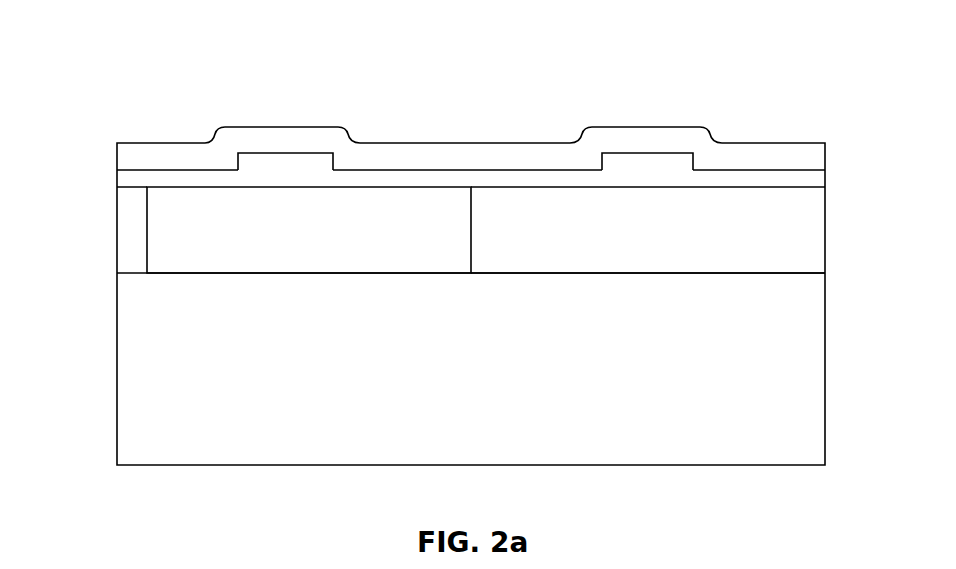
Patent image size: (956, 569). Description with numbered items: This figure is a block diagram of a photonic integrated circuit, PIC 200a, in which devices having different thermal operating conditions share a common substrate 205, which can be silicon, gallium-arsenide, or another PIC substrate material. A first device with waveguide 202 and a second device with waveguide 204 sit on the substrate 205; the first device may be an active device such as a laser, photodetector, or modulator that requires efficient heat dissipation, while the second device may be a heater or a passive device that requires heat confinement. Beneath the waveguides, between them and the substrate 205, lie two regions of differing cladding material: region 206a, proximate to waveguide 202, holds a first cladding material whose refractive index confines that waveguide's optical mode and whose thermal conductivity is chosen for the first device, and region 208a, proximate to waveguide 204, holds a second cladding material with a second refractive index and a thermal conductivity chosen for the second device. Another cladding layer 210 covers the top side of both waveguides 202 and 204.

The PIC 200a is at (487, 78).
The waveguide 202 is at (285, 166).
The waveguide 204 is at (647, 166).
The substrate 205 is at (471, 326).
The region 206a is at (309, 230).
The region 208a is at (66, 262).
The cladding layer 210 is at (471, 158).